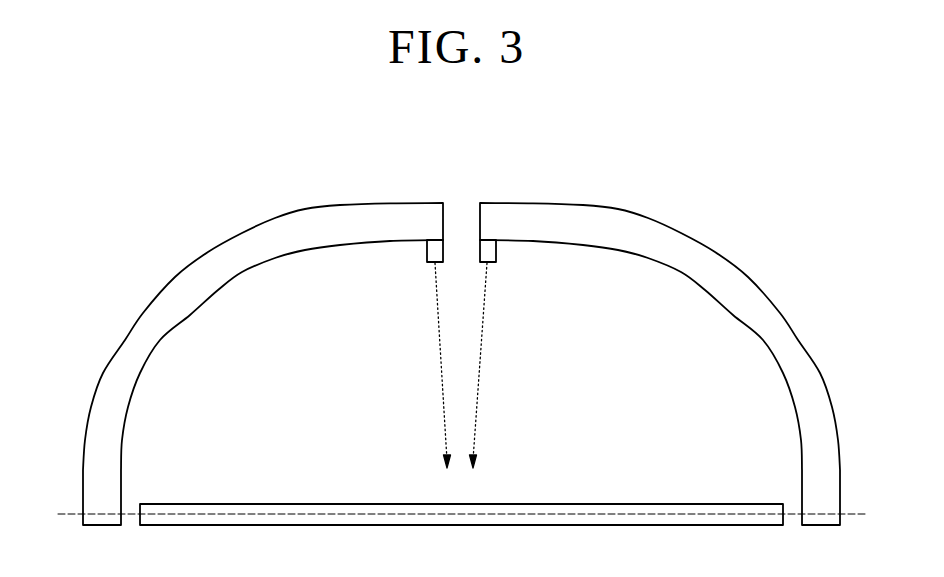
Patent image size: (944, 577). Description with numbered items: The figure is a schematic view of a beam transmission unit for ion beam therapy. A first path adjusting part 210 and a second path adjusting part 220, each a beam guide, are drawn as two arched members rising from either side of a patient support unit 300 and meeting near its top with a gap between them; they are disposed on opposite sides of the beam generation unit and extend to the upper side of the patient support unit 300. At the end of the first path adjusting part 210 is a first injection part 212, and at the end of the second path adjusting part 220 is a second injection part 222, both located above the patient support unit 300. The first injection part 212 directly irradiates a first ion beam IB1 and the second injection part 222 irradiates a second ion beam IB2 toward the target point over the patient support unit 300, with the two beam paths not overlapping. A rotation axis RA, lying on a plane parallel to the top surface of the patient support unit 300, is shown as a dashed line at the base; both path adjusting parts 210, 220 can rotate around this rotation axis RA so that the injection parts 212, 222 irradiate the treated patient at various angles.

The first path adjusting part 210 is at (207, 250).
The second path adjusting part 220 is at (715, 250).
The first injection part 212 is at (427, 251).
The second injection part 222 is at (496, 251).
The first ion beam IB1 is at (440, 334).
The second ion beam IB2 is at (490, 334).
The patient support unit 300 is at (715, 504).
The rotation axis RA is at (852, 512).